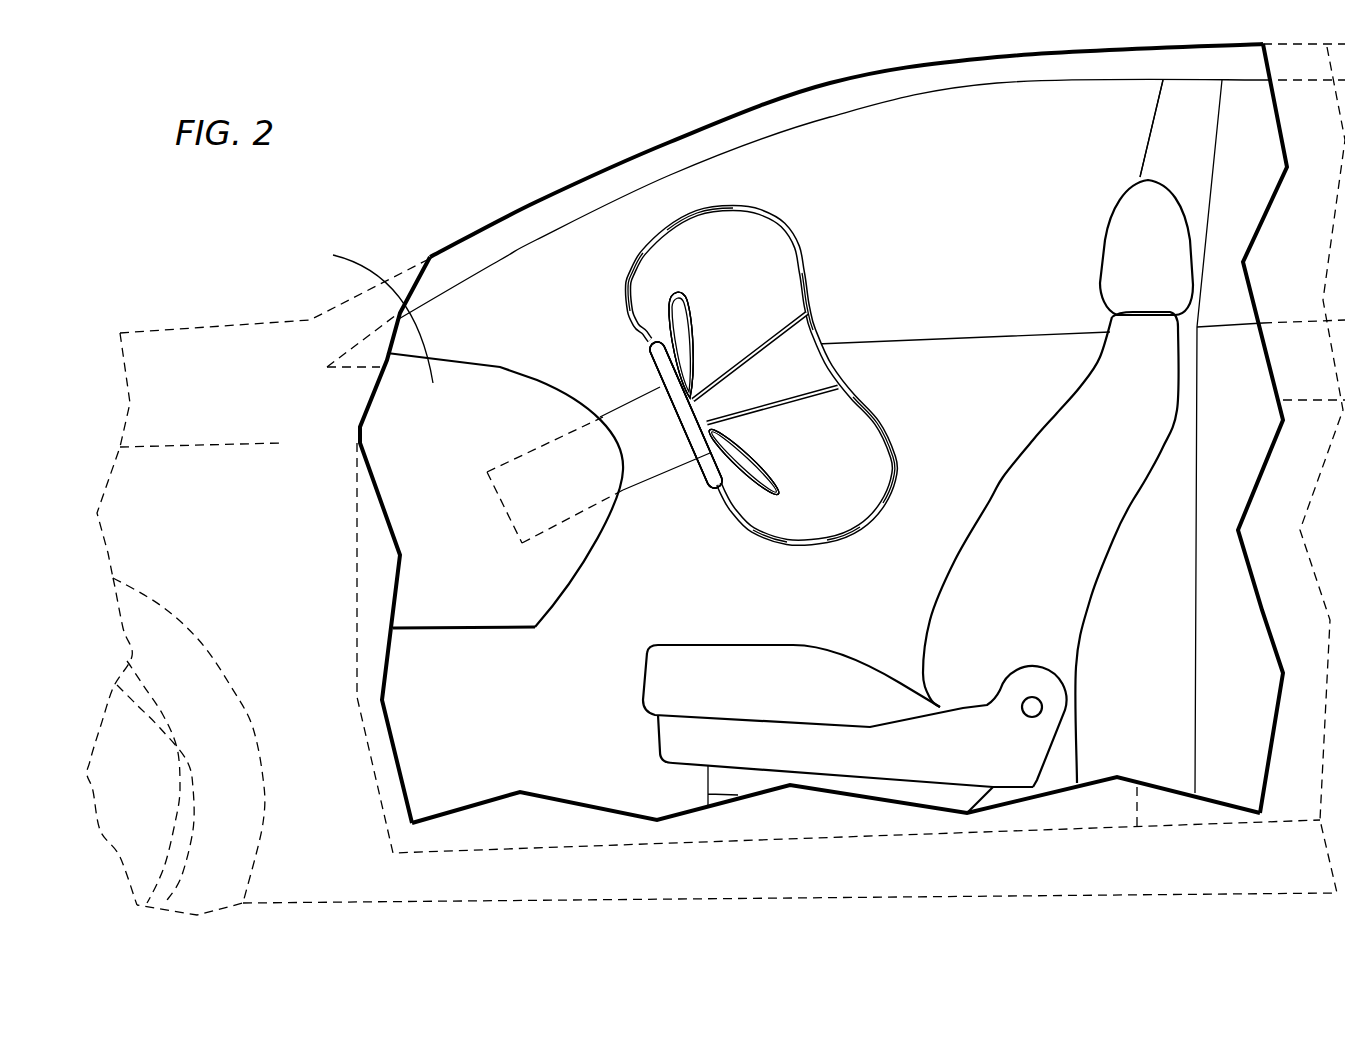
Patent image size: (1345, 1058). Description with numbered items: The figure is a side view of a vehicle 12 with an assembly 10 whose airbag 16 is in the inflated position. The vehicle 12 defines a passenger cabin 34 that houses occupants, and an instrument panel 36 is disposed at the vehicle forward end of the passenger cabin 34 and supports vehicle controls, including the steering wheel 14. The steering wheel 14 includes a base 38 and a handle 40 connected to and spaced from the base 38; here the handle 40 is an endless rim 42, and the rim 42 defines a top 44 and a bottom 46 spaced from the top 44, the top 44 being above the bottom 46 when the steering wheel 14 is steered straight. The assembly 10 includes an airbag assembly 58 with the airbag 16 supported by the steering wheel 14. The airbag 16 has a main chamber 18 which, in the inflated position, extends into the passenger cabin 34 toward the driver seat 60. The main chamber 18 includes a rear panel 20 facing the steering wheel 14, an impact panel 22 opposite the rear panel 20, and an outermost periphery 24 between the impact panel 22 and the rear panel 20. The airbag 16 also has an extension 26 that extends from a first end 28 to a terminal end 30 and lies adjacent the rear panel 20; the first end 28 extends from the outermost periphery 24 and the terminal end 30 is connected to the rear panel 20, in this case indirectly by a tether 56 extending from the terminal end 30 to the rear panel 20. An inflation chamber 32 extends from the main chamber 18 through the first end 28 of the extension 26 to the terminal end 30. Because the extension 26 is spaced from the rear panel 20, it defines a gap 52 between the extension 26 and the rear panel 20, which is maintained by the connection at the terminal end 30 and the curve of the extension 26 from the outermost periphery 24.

The assembly 10 is at (901, 188).
The vehicle 12 is at (767, 82).
The steering wheel 14 is at (707, 478).
The airbag 16 is at (780, 213).
The main chamber 18 is at (890, 500).
The rear panel 20 is at (680, 300).
The impact panel 22 is at (812, 286).
The outermost periphery 24 is at (730, 200).
The extension 26 is at (620, 308).
The first end 28 is at (663, 233).
The terminal end 30 is at (695, 368).
The inflation chamber 32 is at (865, 455).
The passenger cabin 34 is at (975, 128).
The instrument panel 36 is at (367, 312).
The base 38 is at (660, 450).
The handle 40 is at (663, 363).
The rim 42 is at (685, 415).
The top 44 is at (633, 345).
The bottom 46 is at (713, 503).
The gap 52 is at (690, 332).
The tether 56 is at (693, 377).
The airbag assembly 58 is at (628, 572).
The driver seat 60 is at (1133, 402).